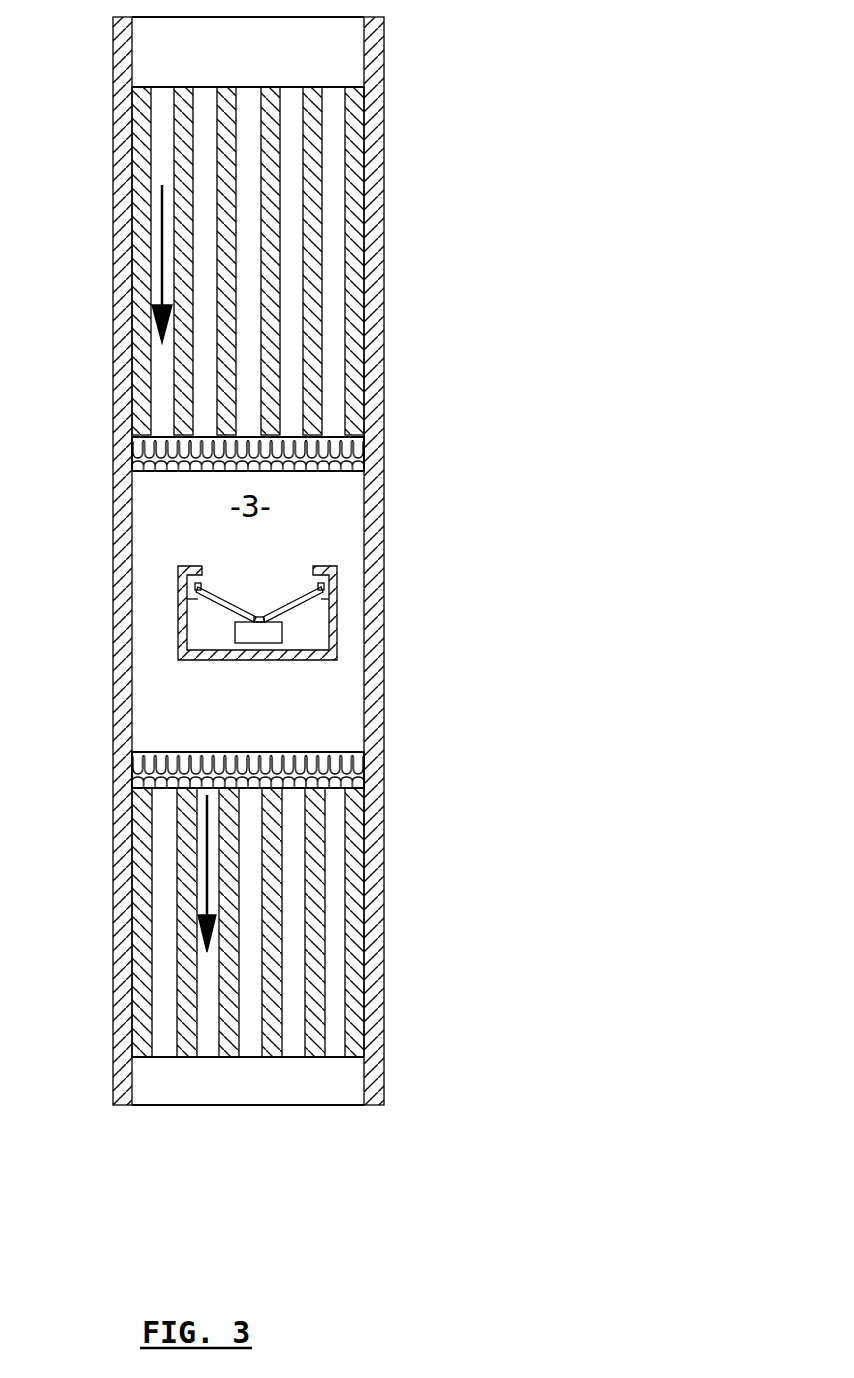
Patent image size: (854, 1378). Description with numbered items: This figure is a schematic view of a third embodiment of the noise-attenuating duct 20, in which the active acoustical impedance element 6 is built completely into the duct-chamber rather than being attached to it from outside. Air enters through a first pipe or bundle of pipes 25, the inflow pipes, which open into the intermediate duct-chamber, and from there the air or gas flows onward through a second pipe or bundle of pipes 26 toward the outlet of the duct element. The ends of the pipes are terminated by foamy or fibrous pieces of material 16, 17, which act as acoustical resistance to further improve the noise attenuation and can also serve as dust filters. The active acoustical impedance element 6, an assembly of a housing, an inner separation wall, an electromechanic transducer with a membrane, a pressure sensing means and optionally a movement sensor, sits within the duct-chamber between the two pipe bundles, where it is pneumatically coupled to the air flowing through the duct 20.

The duct 20 is at (115, 790).
The inflow pipe 25 is at (333, 383).
The second pipe or bundle of pipes 26 is at (335, 852).
The foamy or fibrous piece of material 16 is at (201, 471).
The foamy or fibrous piece of material 17 is at (186, 768).
The active acoustical impedance element 6 is at (320, 633).